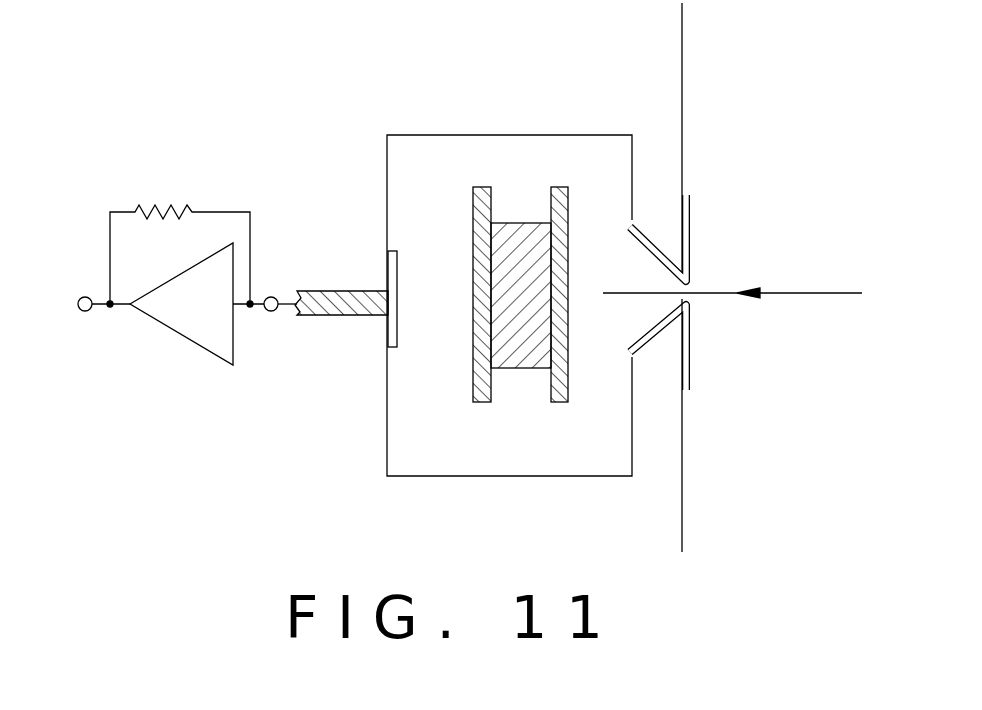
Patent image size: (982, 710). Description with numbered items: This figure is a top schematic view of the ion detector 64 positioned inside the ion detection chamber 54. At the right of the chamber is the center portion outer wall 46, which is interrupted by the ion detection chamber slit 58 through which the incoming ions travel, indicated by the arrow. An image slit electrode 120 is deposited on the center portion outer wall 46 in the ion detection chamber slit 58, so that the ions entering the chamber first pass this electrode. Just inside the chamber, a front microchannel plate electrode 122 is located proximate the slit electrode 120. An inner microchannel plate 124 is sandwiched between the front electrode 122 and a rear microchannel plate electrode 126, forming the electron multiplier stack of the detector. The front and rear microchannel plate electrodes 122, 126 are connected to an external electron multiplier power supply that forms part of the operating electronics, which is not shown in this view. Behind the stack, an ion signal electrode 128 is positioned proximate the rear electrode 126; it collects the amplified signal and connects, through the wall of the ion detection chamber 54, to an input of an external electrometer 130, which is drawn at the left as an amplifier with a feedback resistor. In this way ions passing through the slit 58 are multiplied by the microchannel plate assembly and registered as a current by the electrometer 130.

The center portion outer wall 46 is at (659, 124).
The ion detection chamber 54 is at (432, 160).
The ion detection chamber slit 58 is at (691, 297).
The ion detector 64 is at (397, 97).
The image slit electrode 120 is at (690, 233).
The front microchannel plate electrode 122 is at (568, 320).
The inner microchannel plate 124 is at (520, 368).
The rear microchannel plate electrode 126 is at (473, 387).
The ion signal electrode 128 is at (397, 270).
The external electrometer 130 is at (181, 356).